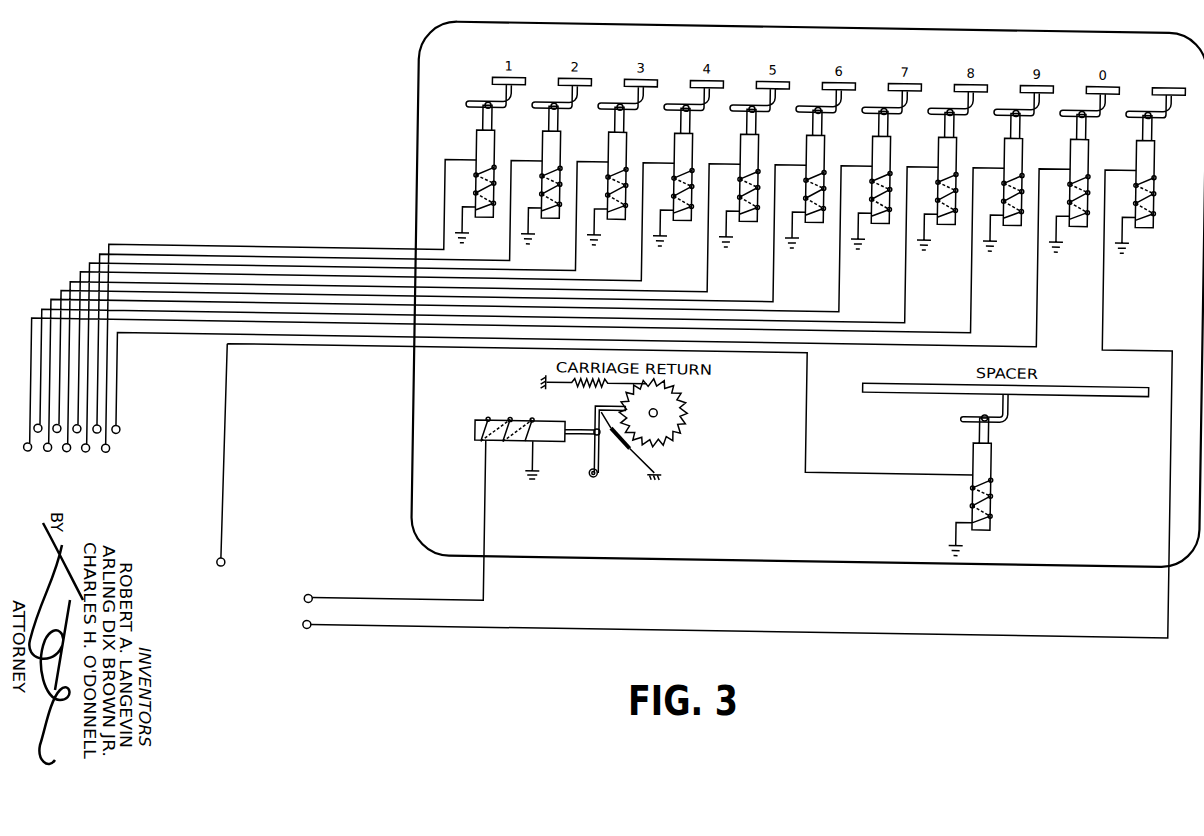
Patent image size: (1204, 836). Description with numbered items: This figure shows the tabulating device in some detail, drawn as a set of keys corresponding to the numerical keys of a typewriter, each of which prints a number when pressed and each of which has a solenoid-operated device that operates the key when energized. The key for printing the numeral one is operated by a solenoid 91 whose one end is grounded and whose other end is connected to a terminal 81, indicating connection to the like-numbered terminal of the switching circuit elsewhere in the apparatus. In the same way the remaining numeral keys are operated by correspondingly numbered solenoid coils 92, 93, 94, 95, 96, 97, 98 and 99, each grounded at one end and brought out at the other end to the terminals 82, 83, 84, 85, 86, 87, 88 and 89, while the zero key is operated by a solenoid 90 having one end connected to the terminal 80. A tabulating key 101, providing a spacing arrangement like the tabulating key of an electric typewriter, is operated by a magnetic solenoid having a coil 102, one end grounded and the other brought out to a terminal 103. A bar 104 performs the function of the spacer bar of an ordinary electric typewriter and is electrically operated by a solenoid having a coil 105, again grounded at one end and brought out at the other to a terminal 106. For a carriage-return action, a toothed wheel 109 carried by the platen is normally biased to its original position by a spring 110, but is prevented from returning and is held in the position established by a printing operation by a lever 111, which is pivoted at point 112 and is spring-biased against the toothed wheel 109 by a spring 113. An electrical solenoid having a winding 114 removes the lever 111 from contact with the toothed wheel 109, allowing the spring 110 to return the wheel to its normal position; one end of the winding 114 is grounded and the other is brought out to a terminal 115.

The terminal 80 is at (122, 437).
The terminal 81 is at (112, 456).
The terminal 82 is at (99, 441).
The terminal 83 is at (88, 460).
The terminal 84 is at (79, 441).
The terminal 85 is at (69, 460).
The terminal 86 is at (59, 441).
The terminal 87 is at (50, 460).
The terminal 88 is at (40, 441).
The terminal 89 is at (30, 460).
The solenoid 90 is at (1082, 182).
The solenoid 91 is at (488, 173).
The solenoid coil 92 is at (554, 174).
The solenoid coil 93 is at (620, 175).
The solenoid coil 94 is at (686, 176).
The solenoid coil 95 is at (752, 177).
The solenoid coil 96 is at (818, 178).
The solenoid coil 97 is at (884, 179).
The solenoid coil 98 is at (950, 180).
The solenoid coil 99 is at (1016, 181).
The tabulating key 101 is at (1165, 104).
The coil 102 is at (1153, 183).
The terminal 103 is at (309, 632).
The bar 104 is at (1021, 386).
The coil 105 is at (996, 486).
The terminal 106 is at (229, 568).
The toothed wheel 109 is at (680, 426).
The spring 110 is at (582, 387).
The lever 111 is at (601, 460).
The pivot point 112 is at (597, 478).
The spring 113 is at (634, 447).
The winding 114 is at (522, 443).
The terminal 115 is at (310, 606).